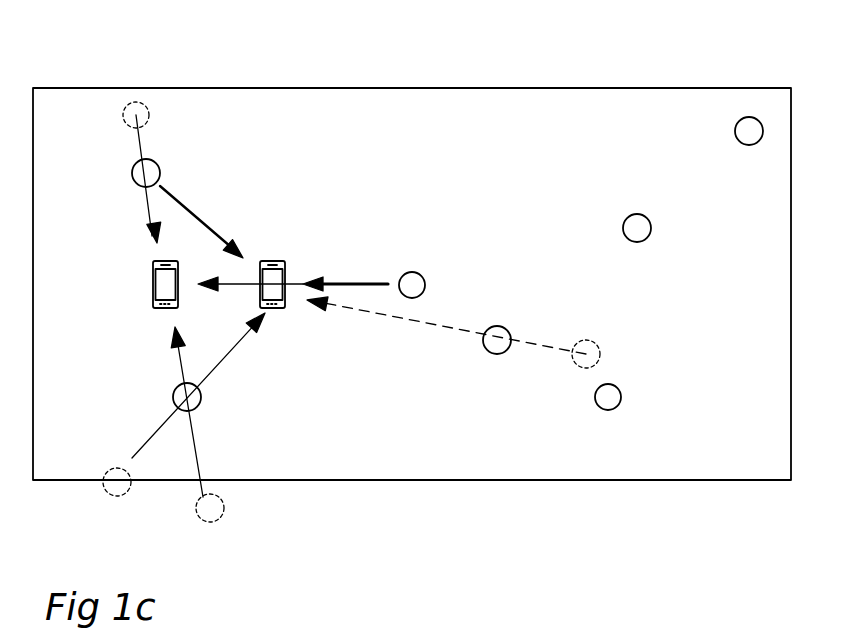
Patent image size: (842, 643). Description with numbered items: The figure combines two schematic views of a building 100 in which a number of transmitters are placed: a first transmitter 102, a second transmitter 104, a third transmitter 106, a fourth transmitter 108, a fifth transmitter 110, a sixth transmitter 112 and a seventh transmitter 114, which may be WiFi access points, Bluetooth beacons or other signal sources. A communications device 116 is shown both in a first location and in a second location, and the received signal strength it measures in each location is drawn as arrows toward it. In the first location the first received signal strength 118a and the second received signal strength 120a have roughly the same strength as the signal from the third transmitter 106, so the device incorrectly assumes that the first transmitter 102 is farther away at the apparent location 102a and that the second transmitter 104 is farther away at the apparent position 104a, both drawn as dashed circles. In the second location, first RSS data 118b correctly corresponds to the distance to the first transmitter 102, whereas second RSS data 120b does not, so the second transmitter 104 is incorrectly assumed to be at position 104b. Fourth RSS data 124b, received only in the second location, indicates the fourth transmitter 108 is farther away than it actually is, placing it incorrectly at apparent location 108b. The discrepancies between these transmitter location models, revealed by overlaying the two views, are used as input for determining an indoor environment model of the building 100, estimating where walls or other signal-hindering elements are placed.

The building 100 is at (637, 68).
The first transmitter 102 is at (140, 171).
The apparent location of first transmitter 102a is at (140, 112).
The second transmitter 104 is at (180, 397).
The apparent position of second transmitter 104a is at (216, 508).
The incorrectly assumed position of second transmitter 104b is at (114, 490).
The third transmitter 106 is at (416, 282).
The fourth transmitter 108 is at (503, 347).
The apparent location of fourth transmitter 108b is at (588, 352).
The fifth transmitter 110 is at (614, 392).
The sixth transmitter 112 is at (641, 224).
The seventh transmitter 114 is at (745, 136).
The communications device 116 is at (278, 262).
The first received signal strength 118a is at (150, 214).
The first RSS data 118b is at (188, 201).
The second received signal strength 120a is at (195, 437).
The second RSS data 120b is at (232, 348).
The fourth RSS data 124b is at (455, 330).